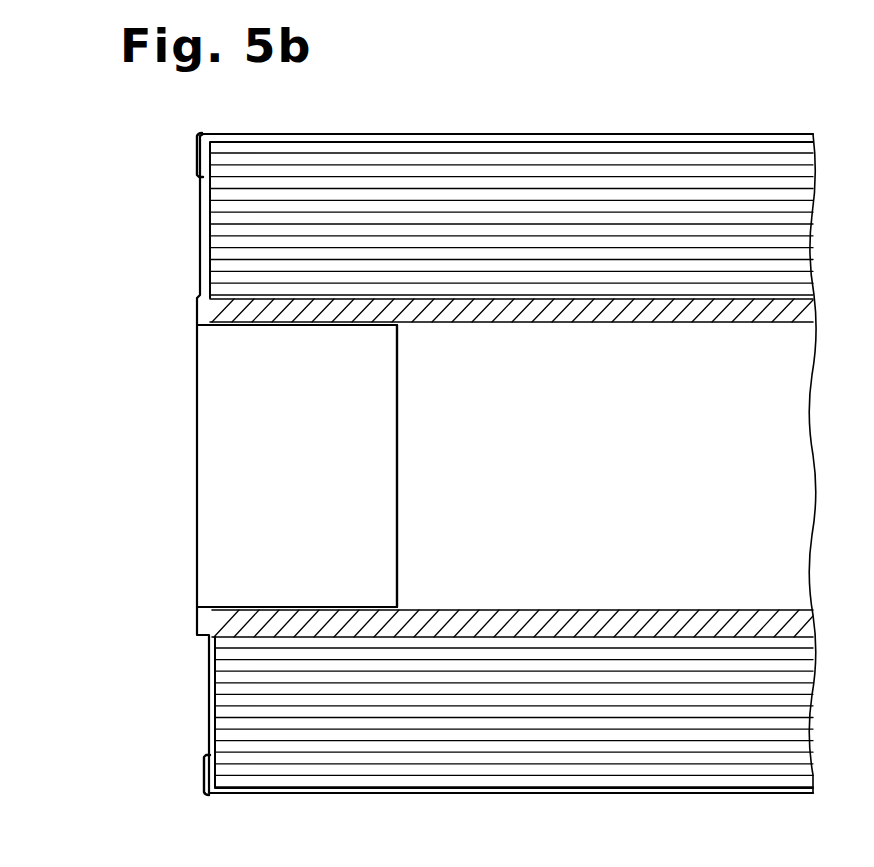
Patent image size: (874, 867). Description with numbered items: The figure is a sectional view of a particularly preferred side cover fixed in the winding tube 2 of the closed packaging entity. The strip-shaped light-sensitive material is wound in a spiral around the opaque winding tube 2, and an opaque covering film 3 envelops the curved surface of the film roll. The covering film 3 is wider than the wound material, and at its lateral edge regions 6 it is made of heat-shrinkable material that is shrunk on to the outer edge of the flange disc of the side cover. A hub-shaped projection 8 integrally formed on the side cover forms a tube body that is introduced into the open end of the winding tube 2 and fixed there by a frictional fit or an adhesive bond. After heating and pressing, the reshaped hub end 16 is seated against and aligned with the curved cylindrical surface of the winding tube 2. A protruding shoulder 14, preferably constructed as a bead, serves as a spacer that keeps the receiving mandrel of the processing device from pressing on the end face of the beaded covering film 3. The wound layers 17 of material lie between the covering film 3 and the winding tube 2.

The winding tube 2 is at (788, 307).
The covering film 3 is at (368, 134).
The lateral edge regions 6 is at (197, 117).
The hub-shaped projection 8 is at (228, 397).
The protruding shoulder 14 is at (198, 312).
The reshaped hub end 16 is at (390, 605).
The layers 17 is at (796, 203).